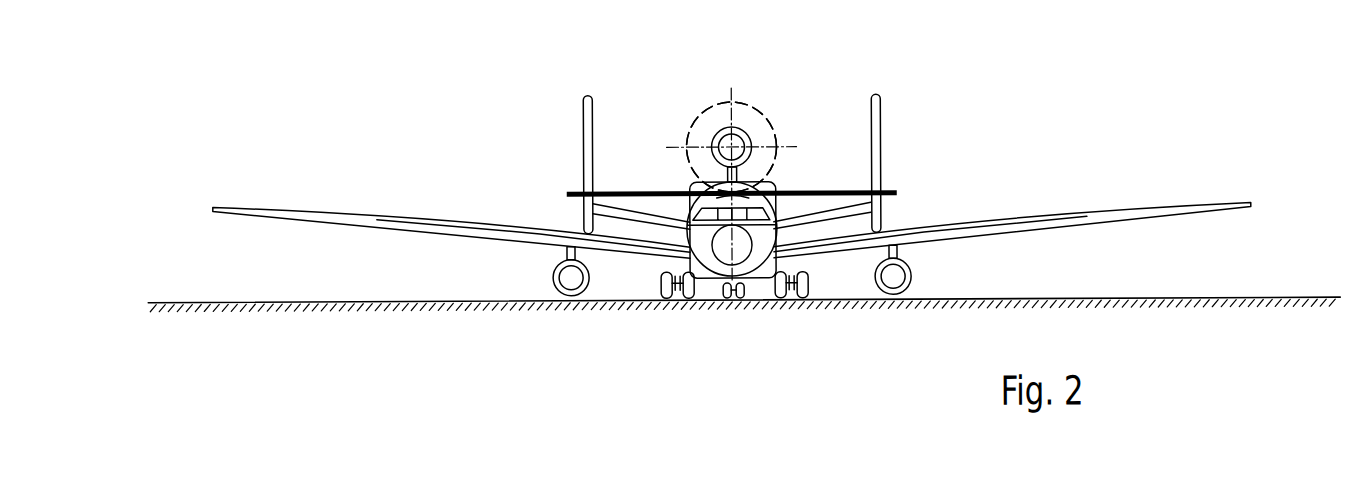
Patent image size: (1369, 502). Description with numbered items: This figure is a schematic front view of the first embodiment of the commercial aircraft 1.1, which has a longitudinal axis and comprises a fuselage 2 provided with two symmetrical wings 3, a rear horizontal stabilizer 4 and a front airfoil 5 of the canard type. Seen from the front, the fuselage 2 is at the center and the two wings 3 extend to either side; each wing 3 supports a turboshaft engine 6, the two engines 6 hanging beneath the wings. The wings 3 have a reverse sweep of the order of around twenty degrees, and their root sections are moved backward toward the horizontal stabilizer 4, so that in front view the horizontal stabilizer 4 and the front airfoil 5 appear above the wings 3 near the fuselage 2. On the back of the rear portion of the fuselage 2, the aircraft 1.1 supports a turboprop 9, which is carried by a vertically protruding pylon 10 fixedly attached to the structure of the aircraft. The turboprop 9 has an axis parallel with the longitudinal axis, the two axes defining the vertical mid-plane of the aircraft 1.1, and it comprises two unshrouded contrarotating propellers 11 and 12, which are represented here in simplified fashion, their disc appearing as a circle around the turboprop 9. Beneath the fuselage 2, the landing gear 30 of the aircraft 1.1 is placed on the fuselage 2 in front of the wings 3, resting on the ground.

The commercial aircraft 1.1 is at (1005, 158).
The fuselage 2 is at (710, 278).
The wings 3 is at (378, 217).
The rear horizontal stabilizer 4 is at (648, 208).
The front airfoil 5 is at (608, 190).
The turboshaft engine 6 is at (572, 300).
The turboprop 9 is at (747, 133).
The pylon 10 is at (744, 168).
The contrarotating propeller 11 is at (709, 103).
The contrarotating propeller 12 is at (731, 105).
The landing gear 30 is at (816, 281).